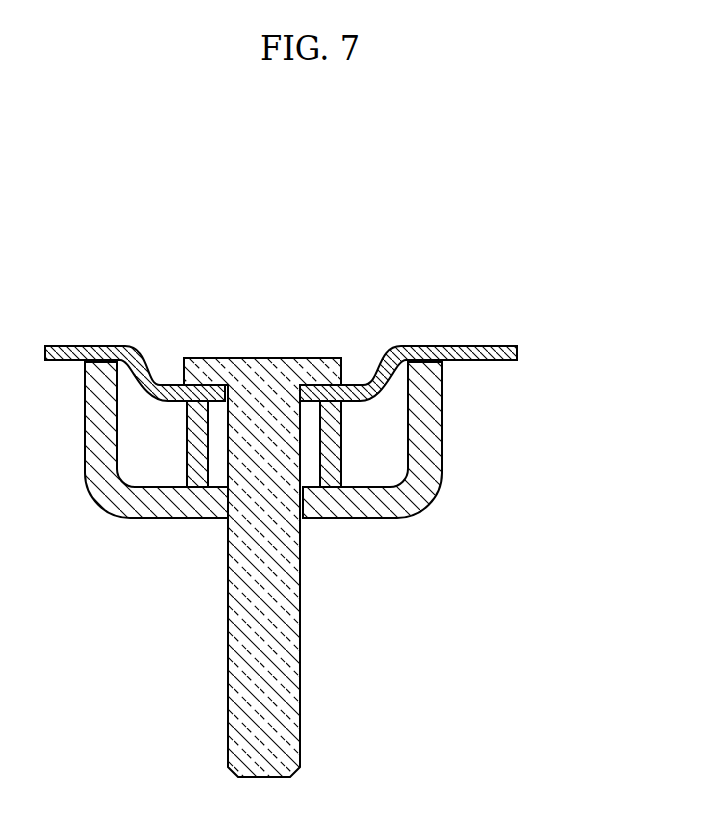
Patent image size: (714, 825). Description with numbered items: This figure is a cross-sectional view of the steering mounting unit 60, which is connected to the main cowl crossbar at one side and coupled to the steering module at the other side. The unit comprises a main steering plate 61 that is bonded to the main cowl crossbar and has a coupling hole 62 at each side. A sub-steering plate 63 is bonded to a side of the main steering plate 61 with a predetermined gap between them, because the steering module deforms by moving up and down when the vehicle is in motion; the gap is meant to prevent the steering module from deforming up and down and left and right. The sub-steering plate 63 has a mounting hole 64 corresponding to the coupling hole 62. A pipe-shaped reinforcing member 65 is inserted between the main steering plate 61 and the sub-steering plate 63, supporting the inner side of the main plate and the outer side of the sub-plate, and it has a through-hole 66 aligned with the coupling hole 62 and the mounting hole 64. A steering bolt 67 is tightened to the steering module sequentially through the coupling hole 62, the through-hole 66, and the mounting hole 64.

The steering mounting unit 60 is at (276, 300).
The main steering plate 61 is at (468, 345).
The coupling hole 62 is at (305, 422).
The sub-steering plate 63 is at (413, 488).
The mounting hole 64 is at (303, 521).
The reinforcing member 65 is at (334, 432).
The through-hole 66 is at (213, 490).
The steering bolt 67 is at (286, 677).